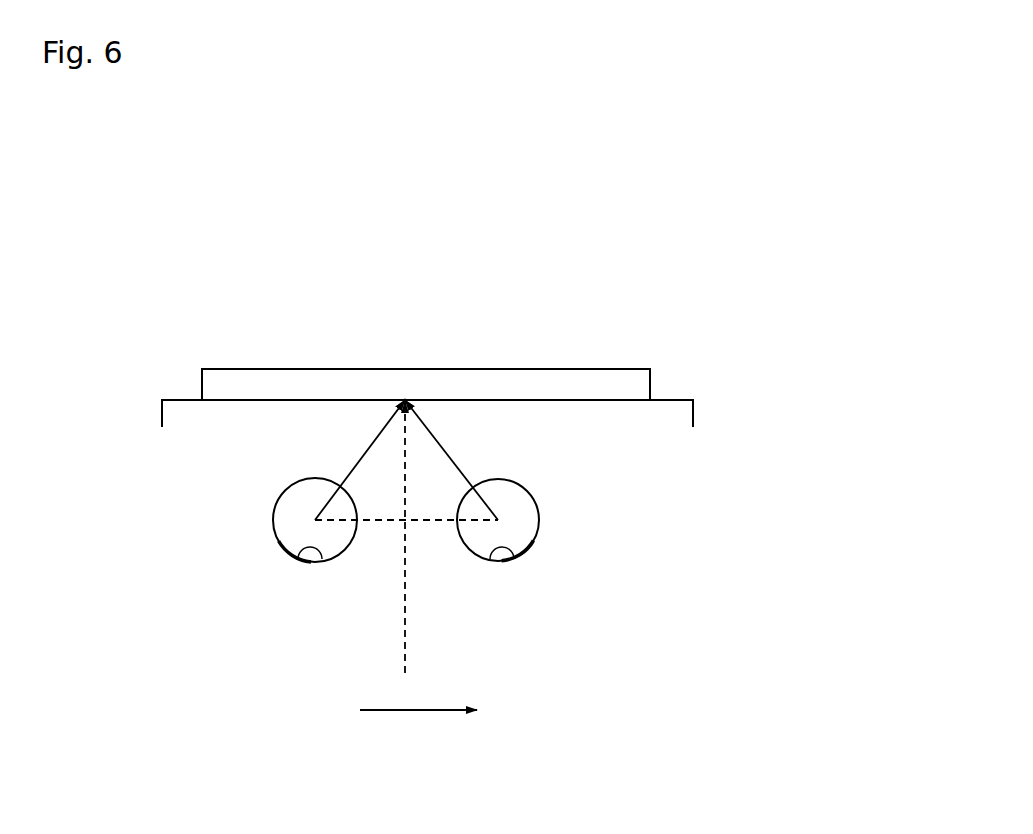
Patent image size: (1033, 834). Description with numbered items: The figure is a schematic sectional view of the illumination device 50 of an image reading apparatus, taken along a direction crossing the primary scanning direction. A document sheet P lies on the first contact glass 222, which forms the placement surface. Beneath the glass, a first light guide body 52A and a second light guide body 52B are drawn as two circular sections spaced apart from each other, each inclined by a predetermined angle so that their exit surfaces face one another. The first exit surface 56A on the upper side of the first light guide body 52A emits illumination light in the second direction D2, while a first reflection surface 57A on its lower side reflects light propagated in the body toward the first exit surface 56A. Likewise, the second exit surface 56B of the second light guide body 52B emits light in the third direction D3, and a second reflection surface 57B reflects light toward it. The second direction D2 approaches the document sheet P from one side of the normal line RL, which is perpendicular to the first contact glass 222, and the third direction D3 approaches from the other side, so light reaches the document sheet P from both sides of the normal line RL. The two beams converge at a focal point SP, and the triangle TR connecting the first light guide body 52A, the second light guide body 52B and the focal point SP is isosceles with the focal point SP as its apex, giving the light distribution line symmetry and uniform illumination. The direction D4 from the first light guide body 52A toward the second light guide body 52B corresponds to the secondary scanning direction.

The illumination device 50 is at (157, 393).
The first light guide body 52A is at (273, 517).
The second light guide body 52B is at (538, 517).
The first exit surface 56A is at (341, 490).
The second exit surface 56B is at (478, 478).
The first reflection surface 57A is at (323, 560).
The second reflection surface 57B is at (492, 560).
The first contact glass 222 is at (677, 400).
The document sheet P is at (621, 380).
The focal point SP is at (406, 398).
The second direction D2 is at (370, 447).
The third direction D3 is at (443, 443).
The secondary scanning direction D4 is at (410, 710).
The triangle TR is at (383, 522).
The normal line RL is at (406, 660).